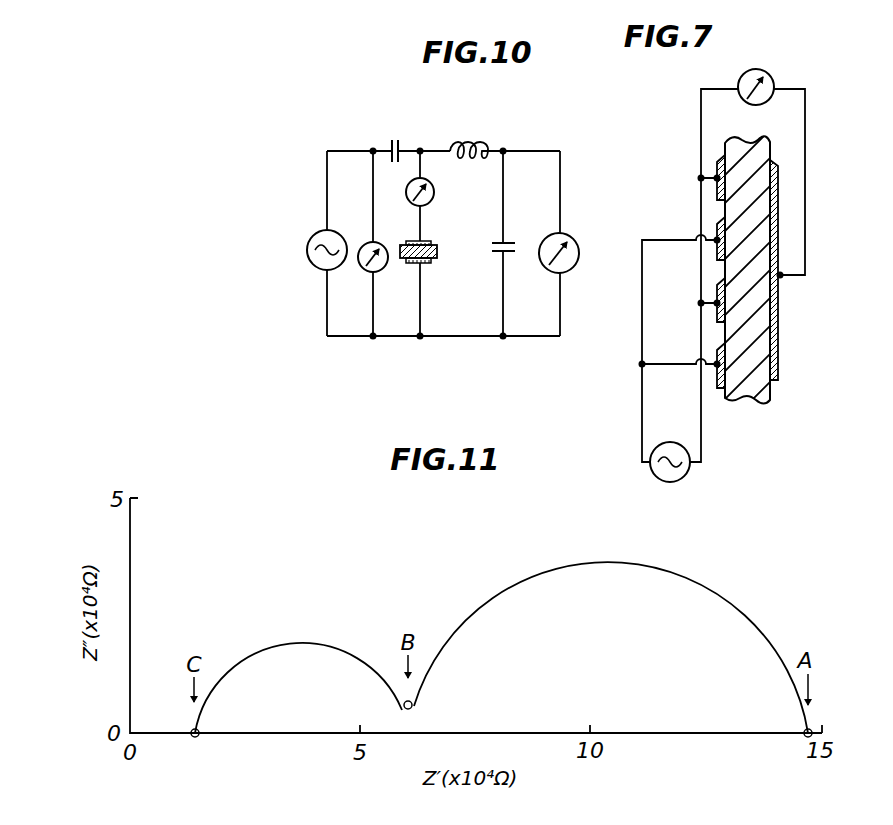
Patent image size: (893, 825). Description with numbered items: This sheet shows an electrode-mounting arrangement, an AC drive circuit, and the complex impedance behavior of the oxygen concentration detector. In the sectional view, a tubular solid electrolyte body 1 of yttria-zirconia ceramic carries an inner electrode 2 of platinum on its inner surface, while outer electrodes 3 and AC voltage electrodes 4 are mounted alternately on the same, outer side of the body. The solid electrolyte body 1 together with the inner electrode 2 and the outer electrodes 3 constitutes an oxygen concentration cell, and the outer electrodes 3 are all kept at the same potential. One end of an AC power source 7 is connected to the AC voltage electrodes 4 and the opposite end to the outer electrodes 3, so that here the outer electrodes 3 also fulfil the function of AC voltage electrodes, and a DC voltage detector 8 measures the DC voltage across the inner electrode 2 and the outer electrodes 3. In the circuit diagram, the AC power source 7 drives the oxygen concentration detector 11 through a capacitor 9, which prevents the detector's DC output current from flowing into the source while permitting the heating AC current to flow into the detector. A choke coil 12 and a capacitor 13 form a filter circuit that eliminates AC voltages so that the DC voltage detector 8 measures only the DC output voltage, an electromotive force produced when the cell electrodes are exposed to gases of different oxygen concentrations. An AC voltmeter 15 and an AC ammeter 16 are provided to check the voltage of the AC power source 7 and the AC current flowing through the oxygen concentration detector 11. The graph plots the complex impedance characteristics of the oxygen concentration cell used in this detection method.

In FIG. 7, the solid electrolyte body 1 is at (770, 143).
In FIG. 7, the inner electrode 2 is at (778, 348).
In FIG. 7, the outer electrodes 3 is at (717, 165).
In FIG. 7, the AC voltage electrodes 4 is at (717, 226).
In FIG. 7, the AC power source 7 is at (686, 477).
In FIG. 10, the AC power source 7 is at (312, 265).
In FIG. 7, the DC voltage detector 8 is at (751, 69).
In FIG. 10, the DC voltage detector 8 is at (576, 243).
In FIG. 10, the capacitor 9 is at (399, 147).
In FIG. 10, the oxygen concentration detector 11 is at (432, 265).
In FIG. 10, the choke coil 12 is at (488, 146).
In FIG. 10, the capacitor 13 is at (508, 238).
In FIG. 10, the AC voltmeter 15 is at (363, 269).
In FIG. 10, the AC ammeter 16 is at (433, 198).